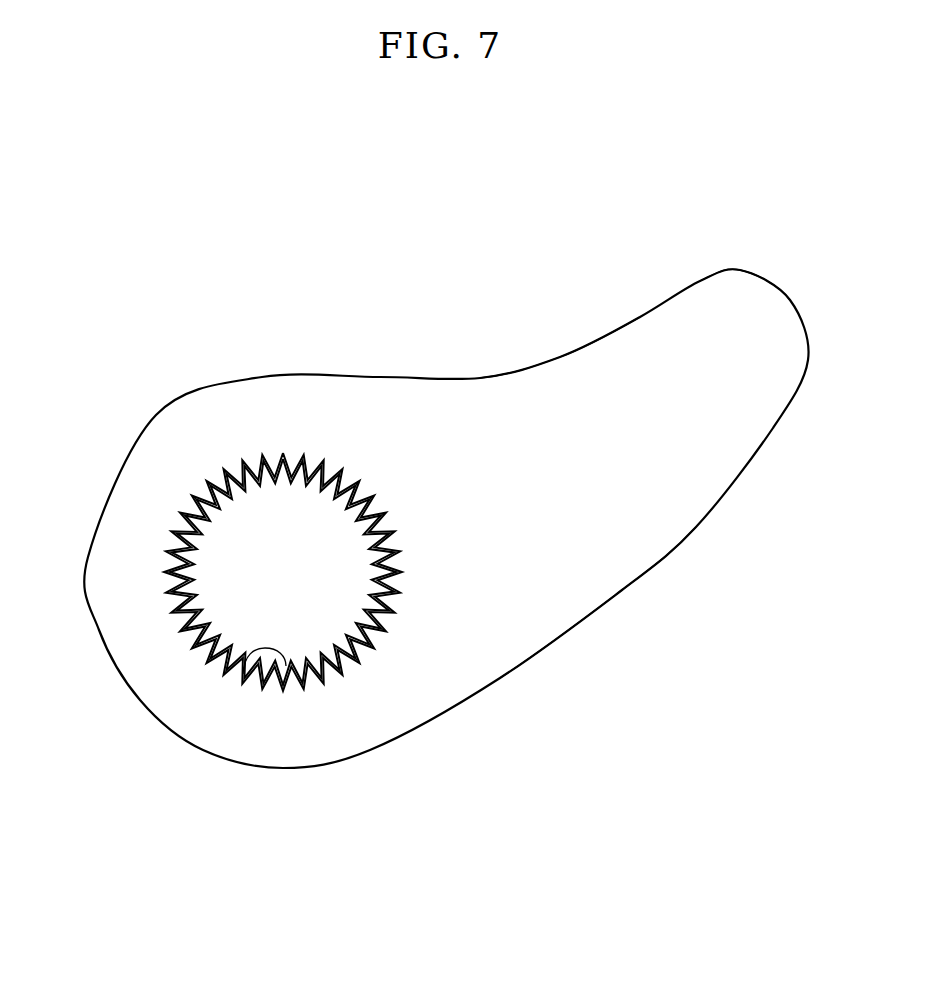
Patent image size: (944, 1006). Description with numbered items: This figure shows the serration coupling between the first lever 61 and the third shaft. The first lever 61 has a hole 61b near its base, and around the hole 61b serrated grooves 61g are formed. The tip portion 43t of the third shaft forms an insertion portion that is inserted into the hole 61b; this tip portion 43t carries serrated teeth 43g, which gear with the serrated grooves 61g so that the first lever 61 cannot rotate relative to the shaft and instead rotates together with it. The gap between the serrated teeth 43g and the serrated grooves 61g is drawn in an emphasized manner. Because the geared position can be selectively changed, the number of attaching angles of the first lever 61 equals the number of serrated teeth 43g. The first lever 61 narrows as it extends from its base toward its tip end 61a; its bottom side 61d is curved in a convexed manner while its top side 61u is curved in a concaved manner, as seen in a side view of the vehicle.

The first lever 61 is at (155, 416).
The tip end portion of lever 61a is at (768, 270).
The top side 61u is at (562, 356).
The bottom side 61d is at (624, 592).
The serrated grooves 61g is at (403, 540).
The serrated teeth 43g is at (333, 467).
The tip portion 43t is at (300, 532).
The hole 61b is at (283, 690).